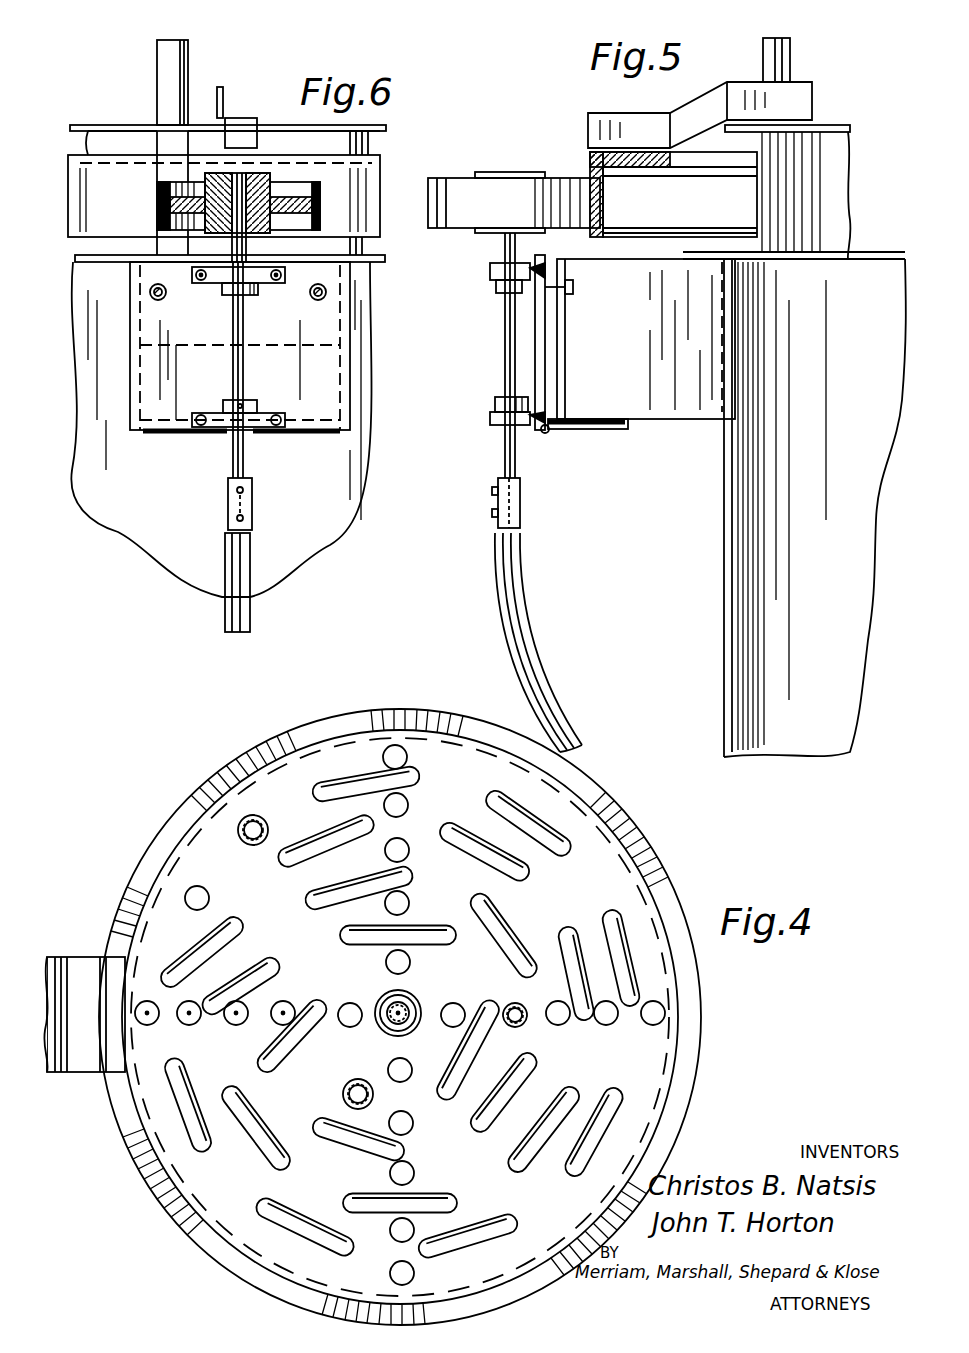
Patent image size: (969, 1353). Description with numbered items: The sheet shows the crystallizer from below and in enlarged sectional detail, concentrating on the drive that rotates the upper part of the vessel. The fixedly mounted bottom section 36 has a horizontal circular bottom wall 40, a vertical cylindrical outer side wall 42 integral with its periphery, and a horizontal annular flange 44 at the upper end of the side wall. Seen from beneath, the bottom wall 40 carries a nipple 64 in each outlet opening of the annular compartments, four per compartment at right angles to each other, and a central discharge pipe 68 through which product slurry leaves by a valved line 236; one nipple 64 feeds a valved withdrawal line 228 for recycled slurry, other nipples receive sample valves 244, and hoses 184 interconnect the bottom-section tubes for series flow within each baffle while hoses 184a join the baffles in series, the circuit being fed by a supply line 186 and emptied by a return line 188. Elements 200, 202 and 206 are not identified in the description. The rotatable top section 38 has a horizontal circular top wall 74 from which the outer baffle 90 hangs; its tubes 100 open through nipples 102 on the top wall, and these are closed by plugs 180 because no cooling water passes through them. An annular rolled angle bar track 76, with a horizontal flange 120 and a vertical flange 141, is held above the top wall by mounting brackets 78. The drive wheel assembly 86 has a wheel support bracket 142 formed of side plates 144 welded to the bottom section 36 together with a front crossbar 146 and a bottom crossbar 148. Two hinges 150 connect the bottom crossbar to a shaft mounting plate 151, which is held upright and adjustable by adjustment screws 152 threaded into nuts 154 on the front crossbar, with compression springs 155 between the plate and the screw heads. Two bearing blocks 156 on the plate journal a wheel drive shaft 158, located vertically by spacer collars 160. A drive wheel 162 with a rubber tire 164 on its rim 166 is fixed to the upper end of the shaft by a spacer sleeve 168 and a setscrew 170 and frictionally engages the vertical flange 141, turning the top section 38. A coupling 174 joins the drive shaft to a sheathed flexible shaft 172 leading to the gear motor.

In FIG. 6, the bottom section 36 is at (110, 527).
In FIG. 5, the bottom section 36 is at (722, 567).
In FIG. 4, the bottom section 36 is at (700, 995).
In FIG. 6, the top section 38 is at (84, 118).
In FIG. 5, the top section 38 is at (860, 155).
In FIG. 4, the bottom wall 40 is at (640, 870).
In FIG. 6, the outer side wall 42 is at (165, 538).
In FIG. 4, the outer side wall 42 is at (348, 710).
In FIG. 6, the annular flange 44 is at (383, 262).
In FIG. 5, the annular flange 44 is at (865, 252).
In FIG. 4, the annular flange 44 is at (625, 820).
In FIG. 4, the nipple 64 is at (408, 808).
In FIG. 4, the discharge pipe 68 is at (412, 998).
In FIG. 6, the top wall 74 is at (385, 125).
In FIG. 5, the top wall 74 is at (832, 125).
In FIG. 6, the track 76 is at (378, 175).
In FIG. 5, the track 76 is at (680, 194).
In FIG. 6, the mounting brackets 78 is at (252, 125).
In FIG. 5, the mounting brackets 78 is at (645, 113).
In FIG. 6, the drive wheel assembly 86 is at (120, 340).
In FIG. 5, the drive wheel assembly 86 is at (465, 405).
In FIG. 4, the drive wheel assembly 86 is at (82, 952).
In FIG. 6, the outer baffle 90 is at (370, 141).
In FIG. 5, the outer baffle 90 is at (835, 183).
In FIG. 6, the tubes 100 is at (157, 143).
In FIG. 6, the nipples 102 is at (157, 78).
In FIG. 5, the nipples 102 is at (792, 62).
In FIG. 5, the horizontal flange 120 is at (665, 170).
In FIG. 6, the vertical flange 141 is at (372, 235).
In FIG. 5, the vertical flange 141 is at (605, 210).
In FIG. 5, the wheel support bracket 142 is at (685, 420).
In FIG. 5, the side plates 144 is at (715, 382).
In FIG. 6, the front crossbar 146 is at (283, 352).
In FIG. 5, the front crossbar 146 is at (570, 318).
In FIG. 5, the bottom crossbar 148 is at (618, 432).
In FIG. 6, the hinges 150 is at (185, 435).
In FIG. 5, the hinges 150 is at (578, 430).
In FIG. 6, the shaft mounting plate 151 is at (325, 387).
In FIG. 5, the shaft mounting plate 151 is at (560, 370).
In FIG. 6, the adjustment screws 152 is at (150, 298).
In FIG. 5, the adjustment screws 152 is at (525, 318).
In FIG. 5, the nuts 154 is at (568, 280).
In FIG. 5, the compression springs 155 is at (547, 338).
In FIG. 6, the bearing blocks 156 is at (198, 283).
In FIG. 5, the bearing blocks 156 is at (490, 272).
In FIG. 6, the wheel drive shaft 158 is at (245, 307).
In FIG. 5, the wheel drive shaft 158 is at (505, 355).
In FIG. 6, the spacer collars 160 is at (232, 312).
In FIG. 5, the spacer collars 160 is at (497, 290).
In FIG. 6, the drive wheel 162 is at (157, 206).
In FIG. 5, the drive wheel 162 is at (458, 178).
In FIG. 6, the rubber tire 164 is at (320, 213).
In FIG. 6, the rim 166 is at (318, 195).
In FIG. 6, the spacer sleeve 168 is at (250, 238).
In FIG. 6, the setscrew 170 is at (205, 186).
In FIG. 6, the sheathed flexible shaft 172 is at (250, 571).
In FIG. 5, the sheathed flexible shaft 172 is at (560, 588).
In FIG. 6, the coupling 174 is at (253, 504).
In FIG. 5, the coupling 174 is at (522, 500).
In FIG. 6, the plugs 180 is at (186, 40).
In FIG. 4, the hoses 184 is at (262, 1203).
In FIG. 4, the hoses 184a is at (290, 985).
In FIG. 4, the supply line 186 is at (343, 1094).
In FIG. 4, the return line 188 is at (268, 822).
In FIG. 4, the hole 200 is at (408, 898).
In FIG. 4, the hole 202 is at (148, 1024).
In FIG. 4, the hole 206 is at (650, 1000).
In FIG. 4, the valved withdrawal line 228 is at (510, 1027).
In FIG. 4, the valved line 236 is at (390, 1022).
In FIG. 4, the sample valves 244 is at (392, 1262).